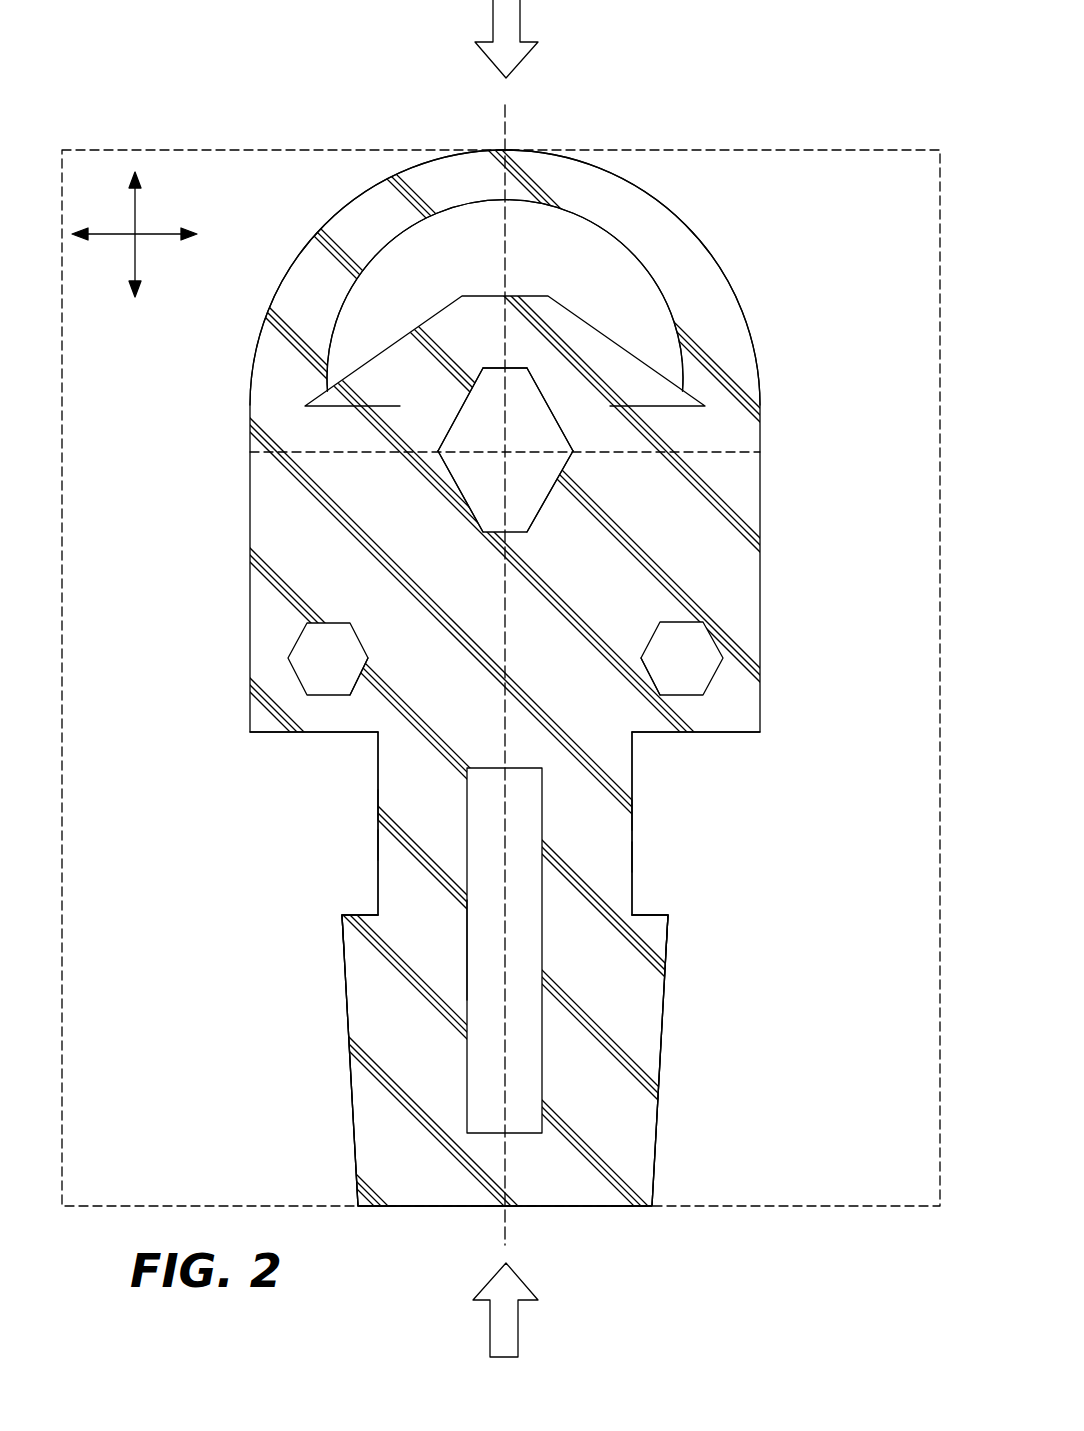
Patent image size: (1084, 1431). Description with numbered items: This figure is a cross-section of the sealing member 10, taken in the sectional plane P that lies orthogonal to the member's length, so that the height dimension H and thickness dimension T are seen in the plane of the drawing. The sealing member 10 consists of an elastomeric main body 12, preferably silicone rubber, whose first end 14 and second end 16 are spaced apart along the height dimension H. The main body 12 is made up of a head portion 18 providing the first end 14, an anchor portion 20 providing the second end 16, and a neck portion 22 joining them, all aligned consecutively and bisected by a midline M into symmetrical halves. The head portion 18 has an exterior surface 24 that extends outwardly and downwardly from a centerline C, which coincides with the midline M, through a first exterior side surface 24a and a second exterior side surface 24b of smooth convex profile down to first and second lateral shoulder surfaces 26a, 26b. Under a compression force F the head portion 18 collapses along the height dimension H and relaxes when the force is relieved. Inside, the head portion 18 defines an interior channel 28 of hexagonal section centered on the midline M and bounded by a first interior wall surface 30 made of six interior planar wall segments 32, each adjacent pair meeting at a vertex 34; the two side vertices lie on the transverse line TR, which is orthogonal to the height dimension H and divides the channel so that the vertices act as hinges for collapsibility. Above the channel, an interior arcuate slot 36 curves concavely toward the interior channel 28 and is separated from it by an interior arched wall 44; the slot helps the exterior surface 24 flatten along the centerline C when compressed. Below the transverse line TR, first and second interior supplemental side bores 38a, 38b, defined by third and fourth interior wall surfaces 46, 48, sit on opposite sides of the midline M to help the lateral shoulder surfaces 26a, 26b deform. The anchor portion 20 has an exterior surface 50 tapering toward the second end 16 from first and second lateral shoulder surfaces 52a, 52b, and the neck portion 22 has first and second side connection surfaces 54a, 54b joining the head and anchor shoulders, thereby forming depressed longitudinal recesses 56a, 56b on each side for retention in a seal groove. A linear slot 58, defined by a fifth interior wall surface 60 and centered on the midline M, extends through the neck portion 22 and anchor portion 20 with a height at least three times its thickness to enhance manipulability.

The sealing member 10 is at (800, 295).
The elastomeric main body 12 is at (725, 492).
The first end 14 is at (526, 150).
The second end 16 is at (508, 1208).
The head portion 18 is at (765, 377).
The anchor portion 20 is at (668, 1027).
The neck portion 22 is at (640, 775).
The exterior surface 24 is at (526, 277).
The first exterior side surface 24a is at (306, 248).
The second exterior side surface 24b is at (714, 260).
The first lateral shoulder surface 26a is at (278, 735).
The second lateral shoulder surface 26b is at (730, 733).
The interior channel 28 is at (497, 437).
The first interior wall surface 30 is at (475, 490).
The interior planar wall segments 32 is at (500, 368).
The vertex 34 is at (437, 451).
The interior arcuate slot 36 is at (350, 300).
The first interior supplemental side bore 38a is at (345, 668).
The second interior supplemental side bore 38b is at (652, 662).
The interior arched wall 44 is at (533, 322).
The third interior wall surface 46 is at (313, 647).
The fourth interior wall surface 48 is at (700, 642).
The exterior surface 50 is at (348, 1093).
The first lateral shoulder surface 52a is at (344, 908).
The second lateral shoulder surface 52b is at (666, 912).
The first side connection surface 54a is at (378, 845).
The second side connection surface 54b is at (634, 857).
The depressed longitudinal recess 56a is at (372, 803).
The depressed longitudinal recess 56b is at (640, 815).
The linear slot 58 is at (470, 940).
The fifth interior wall surface 60 is at (467, 877).
The centerline C is at (504, 150).
The sectional plane P is at (706, 148).
The midline M is at (505, 637).
The compression force F is at (521, 9).
The height dimension H is at (136, 207).
The thickness dimension T is at (158, 236).
The transverse line TR is at (333, 453).